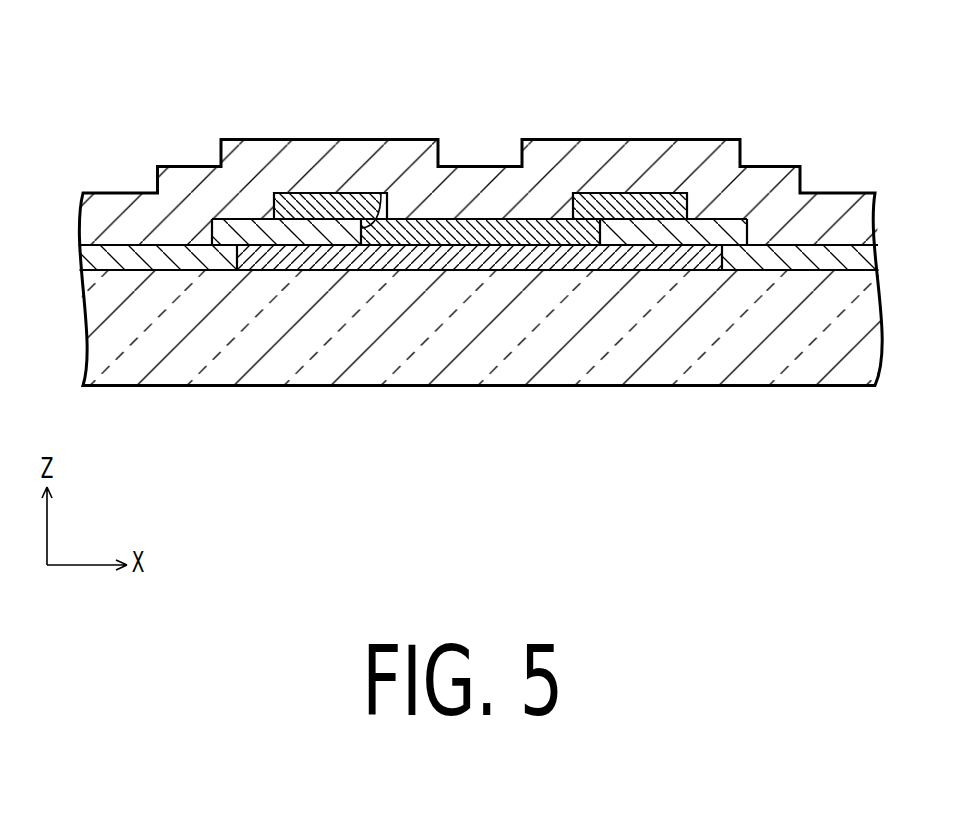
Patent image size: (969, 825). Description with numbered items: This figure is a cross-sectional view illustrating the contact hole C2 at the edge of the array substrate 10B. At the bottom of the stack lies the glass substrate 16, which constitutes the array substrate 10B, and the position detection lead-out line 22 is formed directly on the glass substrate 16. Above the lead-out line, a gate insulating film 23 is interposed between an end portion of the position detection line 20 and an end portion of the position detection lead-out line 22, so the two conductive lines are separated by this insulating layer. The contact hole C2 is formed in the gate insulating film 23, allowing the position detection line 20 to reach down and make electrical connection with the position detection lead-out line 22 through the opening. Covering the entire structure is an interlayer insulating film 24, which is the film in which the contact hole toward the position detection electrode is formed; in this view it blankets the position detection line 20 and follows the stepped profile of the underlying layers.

The array substrate 10B is at (175, 115).
The glass substrate 16 is at (225, 363).
The position detection line 20 is at (467, 228).
The position detection lead-out line 22 is at (482, 260).
The gate insulating film 23 is at (818, 257).
The interlayer insulating film 24 is at (678, 162).
The contact hole C2 is at (378, 193).